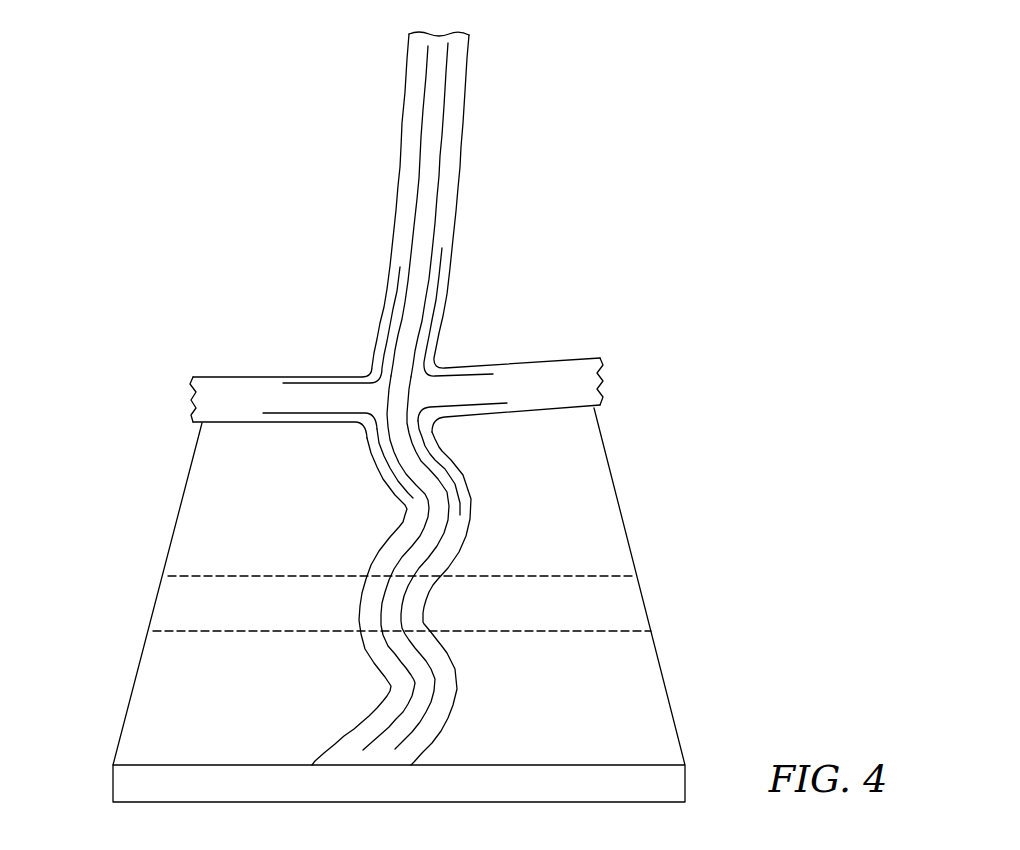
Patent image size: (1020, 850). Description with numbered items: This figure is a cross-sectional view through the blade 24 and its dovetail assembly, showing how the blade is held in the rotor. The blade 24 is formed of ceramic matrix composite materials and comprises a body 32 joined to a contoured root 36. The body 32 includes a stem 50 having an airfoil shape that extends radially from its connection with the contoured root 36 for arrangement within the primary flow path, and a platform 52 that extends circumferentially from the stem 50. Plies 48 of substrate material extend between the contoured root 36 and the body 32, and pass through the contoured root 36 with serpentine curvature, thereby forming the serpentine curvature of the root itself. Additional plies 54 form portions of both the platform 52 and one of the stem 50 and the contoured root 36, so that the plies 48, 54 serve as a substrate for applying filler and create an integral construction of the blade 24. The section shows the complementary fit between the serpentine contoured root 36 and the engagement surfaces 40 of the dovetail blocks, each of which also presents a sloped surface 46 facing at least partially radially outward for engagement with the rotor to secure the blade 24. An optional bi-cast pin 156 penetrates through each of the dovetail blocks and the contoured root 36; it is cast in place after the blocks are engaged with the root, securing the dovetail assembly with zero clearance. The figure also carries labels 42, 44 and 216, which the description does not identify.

The blade 24 is at (396, 195).
The body 32 is at (460, 277).
The contoured root 36 is at (431, 570).
The engagement surfaces 40 is at (378, 617).
The outer strip layer 42 is at (470, 567).
The outer strip layer 44 is at (380, 507).
The sloped surface 46 is at (624, 512).
The plies 48 is at (452, 117).
The stem 50 is at (384, 168).
The platform 52 is at (396, 372).
The additional plies 54 is at (310, 402).
The pin 156 is at (627, 612).
The base plate edge 216 is at (173, 514).